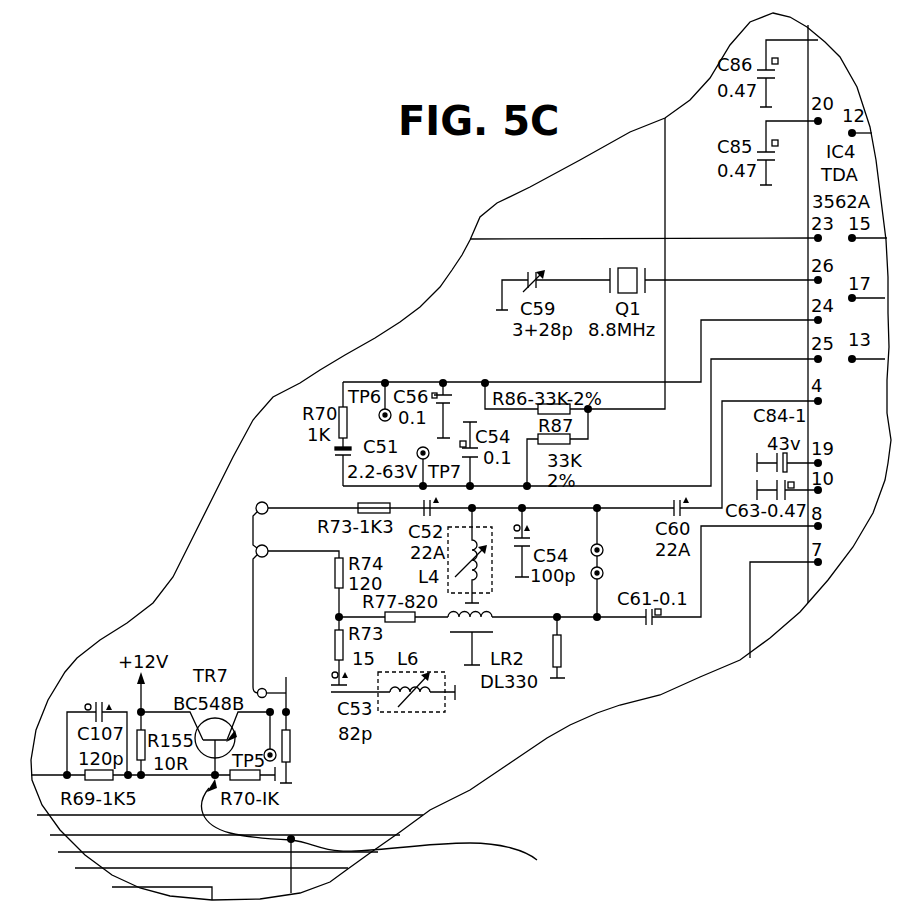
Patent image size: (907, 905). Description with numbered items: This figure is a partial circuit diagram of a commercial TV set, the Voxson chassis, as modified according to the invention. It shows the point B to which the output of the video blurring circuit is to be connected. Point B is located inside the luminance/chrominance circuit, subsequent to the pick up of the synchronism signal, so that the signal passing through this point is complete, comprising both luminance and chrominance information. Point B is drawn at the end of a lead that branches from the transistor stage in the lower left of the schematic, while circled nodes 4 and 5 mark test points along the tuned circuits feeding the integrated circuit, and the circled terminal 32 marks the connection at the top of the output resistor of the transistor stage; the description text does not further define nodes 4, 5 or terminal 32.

The test node 4 (TP8/TP9 node) 4 is at (590, 512).
The test node 5 (R88 node) 5 is at (589, 614).
The output connection 32 is at (300, 715).
The point B is at (382, 836).